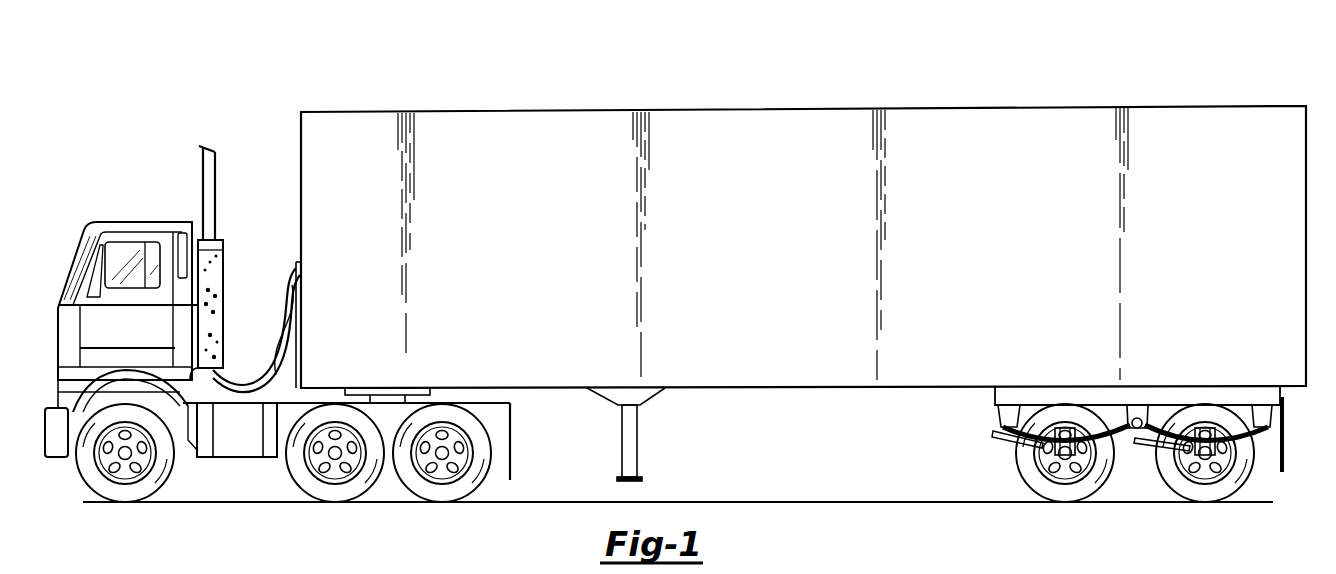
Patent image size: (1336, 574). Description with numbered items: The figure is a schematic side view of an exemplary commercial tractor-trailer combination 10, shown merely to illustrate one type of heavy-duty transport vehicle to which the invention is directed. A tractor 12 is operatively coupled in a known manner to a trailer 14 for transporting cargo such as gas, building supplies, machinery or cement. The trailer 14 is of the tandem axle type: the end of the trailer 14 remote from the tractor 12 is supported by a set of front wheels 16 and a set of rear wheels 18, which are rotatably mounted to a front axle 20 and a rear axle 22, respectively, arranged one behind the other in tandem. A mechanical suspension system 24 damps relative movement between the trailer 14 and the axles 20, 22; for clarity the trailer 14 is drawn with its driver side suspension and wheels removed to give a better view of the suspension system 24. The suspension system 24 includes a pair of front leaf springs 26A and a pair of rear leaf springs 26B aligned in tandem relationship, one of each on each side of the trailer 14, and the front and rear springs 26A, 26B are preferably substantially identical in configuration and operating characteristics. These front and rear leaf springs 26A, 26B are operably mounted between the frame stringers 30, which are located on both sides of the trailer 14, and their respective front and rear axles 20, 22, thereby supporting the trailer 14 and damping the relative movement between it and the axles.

The tractor-trailer combination 10 is at (346, 102).
The tractor 12 is at (103, 220).
The trailer 14 is at (598, 140).
The front wheels 16 is at (1065, 503).
The rear wheels 18 is at (1205, 503).
The front axle 20 is at (1060, 458).
The rear axle 22 is at (1202, 473).
The mechanical suspension system 24 is at (1135, 432).
The front leaf springs 26A is at (1045, 430).
The rear leaf springs 26B is at (1187, 423).
The frame stringers 30 is at (1007, 395).